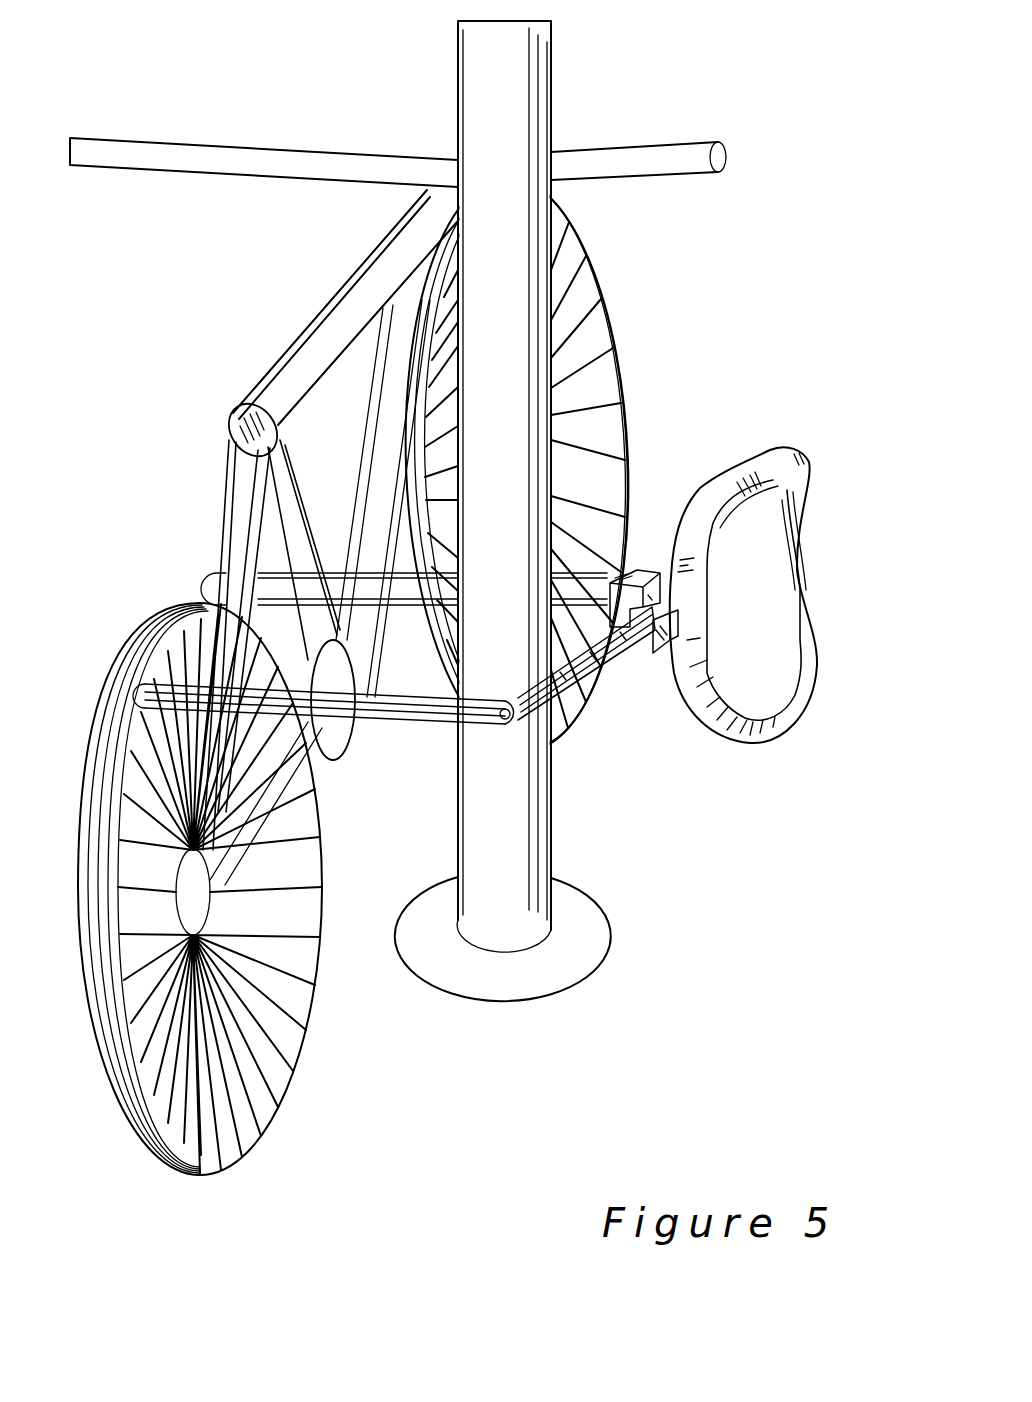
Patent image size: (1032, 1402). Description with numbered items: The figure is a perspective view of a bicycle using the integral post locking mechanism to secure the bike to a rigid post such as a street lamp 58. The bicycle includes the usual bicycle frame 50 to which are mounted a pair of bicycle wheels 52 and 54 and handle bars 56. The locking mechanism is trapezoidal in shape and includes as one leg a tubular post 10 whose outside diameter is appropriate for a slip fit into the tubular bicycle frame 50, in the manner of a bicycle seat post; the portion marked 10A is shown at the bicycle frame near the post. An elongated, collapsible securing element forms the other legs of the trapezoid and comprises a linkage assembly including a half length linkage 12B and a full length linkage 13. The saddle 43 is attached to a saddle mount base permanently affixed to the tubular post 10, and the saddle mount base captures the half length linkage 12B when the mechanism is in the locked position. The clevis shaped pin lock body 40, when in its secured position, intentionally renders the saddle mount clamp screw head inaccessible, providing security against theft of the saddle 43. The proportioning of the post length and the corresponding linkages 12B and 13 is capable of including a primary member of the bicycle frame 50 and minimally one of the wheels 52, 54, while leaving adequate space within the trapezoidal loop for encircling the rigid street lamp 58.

The tubular post 10 is at (630, 567).
The support bar 10A is at (278, 512).
The half length linkage 12B is at (577, 693).
The full length linkage 13 is at (378, 717).
The clevis shaped pin lock body 40 is at (650, 652).
The saddle 43 is at (767, 687).
The bicycle frame 50 is at (370, 502).
The bicycle wheel 52 is at (265, 1063).
The bicycle wheel 54 is at (600, 413).
The handle bars 56 is at (230, 158).
The street lamp 58 is at (492, 97).